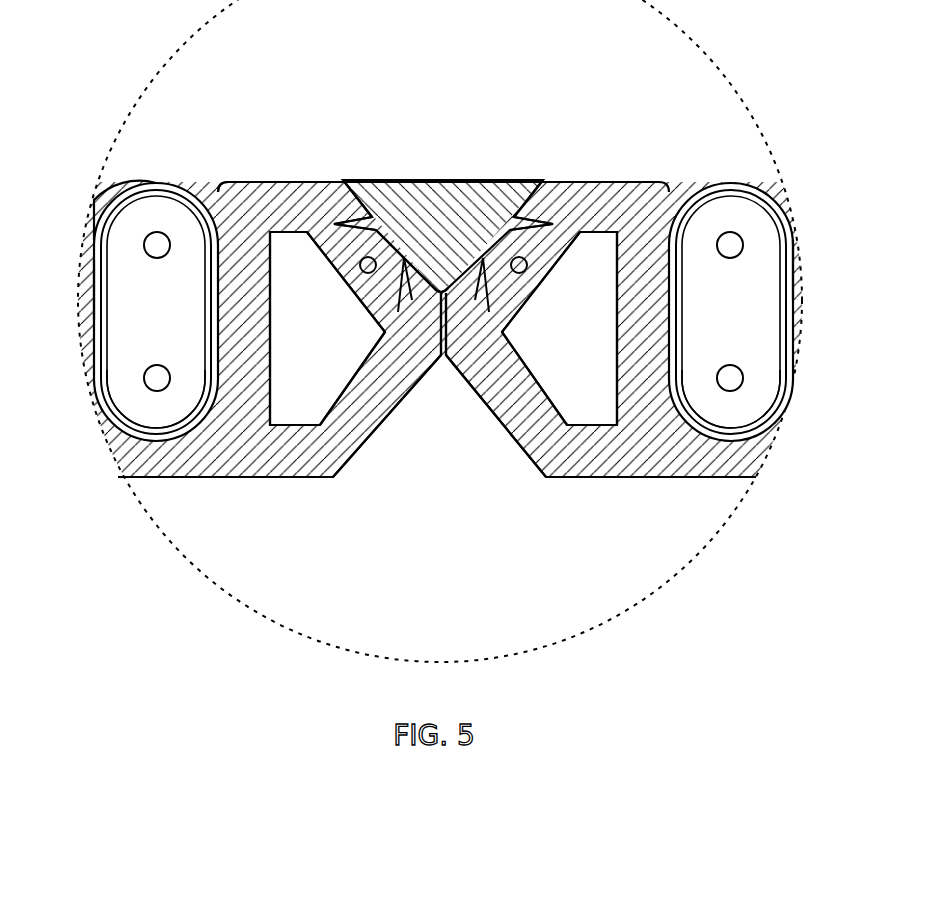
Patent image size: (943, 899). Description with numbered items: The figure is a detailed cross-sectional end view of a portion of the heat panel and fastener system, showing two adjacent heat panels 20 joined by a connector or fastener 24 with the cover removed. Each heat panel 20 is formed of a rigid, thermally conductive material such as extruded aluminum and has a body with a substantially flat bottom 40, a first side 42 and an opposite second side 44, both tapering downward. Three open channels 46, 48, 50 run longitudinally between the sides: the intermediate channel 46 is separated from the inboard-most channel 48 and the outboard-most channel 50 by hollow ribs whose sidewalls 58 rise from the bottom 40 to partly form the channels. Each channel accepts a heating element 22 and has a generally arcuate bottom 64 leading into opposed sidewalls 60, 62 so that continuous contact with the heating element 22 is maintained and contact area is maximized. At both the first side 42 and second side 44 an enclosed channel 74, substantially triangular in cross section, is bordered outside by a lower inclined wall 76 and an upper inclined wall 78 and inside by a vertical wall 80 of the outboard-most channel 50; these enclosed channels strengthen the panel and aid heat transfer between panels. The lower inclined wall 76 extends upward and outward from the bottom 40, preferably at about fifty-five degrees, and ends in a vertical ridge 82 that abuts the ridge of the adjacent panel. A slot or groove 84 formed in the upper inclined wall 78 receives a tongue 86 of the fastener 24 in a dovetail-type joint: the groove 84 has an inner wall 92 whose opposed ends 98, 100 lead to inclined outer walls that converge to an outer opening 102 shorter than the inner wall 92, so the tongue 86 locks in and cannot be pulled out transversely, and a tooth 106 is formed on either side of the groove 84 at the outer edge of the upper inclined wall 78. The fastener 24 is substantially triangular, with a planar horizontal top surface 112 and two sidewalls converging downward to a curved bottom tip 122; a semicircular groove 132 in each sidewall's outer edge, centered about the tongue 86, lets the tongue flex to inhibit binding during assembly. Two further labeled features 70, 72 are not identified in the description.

The heat panel 20 is at (276, 172).
The heating element 22 is at (140, 212).
The fastener 24 is at (400, 171).
The bottom 40 is at (650, 392).
The first side 42 is at (244, 173).
The second side 44 is at (580, 171).
The intermediate channel 46 is at (96, 205).
The inboard-most channel 48 is at (793, 290).
The outboard-most channel 50 is at (200, 169).
The rib sidewall 58 is at (77, 302).
The channel sidewall 60 is at (97, 328).
The channel sidewall 62 is at (213, 343).
The arcuate bottom 64 is at (173, 433).
The bottom surface 70 is at (585, 478).
The top surface 72 is at (622, 182).
The enclosed channel 74 is at (279, 338).
The lower inclined wall 76 is at (374, 418).
The upper inclined wall 78 is at (308, 231).
The vertical wall 80 is at (273, 272).
The vertical ridge 82 is at (443, 430).
The groove 84 is at (478, 256).
The tongue 86 is at (373, 210).
The inner wall 92 is at (363, 271).
The inner wall end 98 is at (336, 222).
The inner wall end 100 is at (378, 318).
The outer opening 102 is at (517, 256).
The tooth 106 is at (548, 223).
The top surface 112 is at (400, 257).
The bottom tip 122 is at (441, 290).
The semicircular groove 132 is at (524, 271).